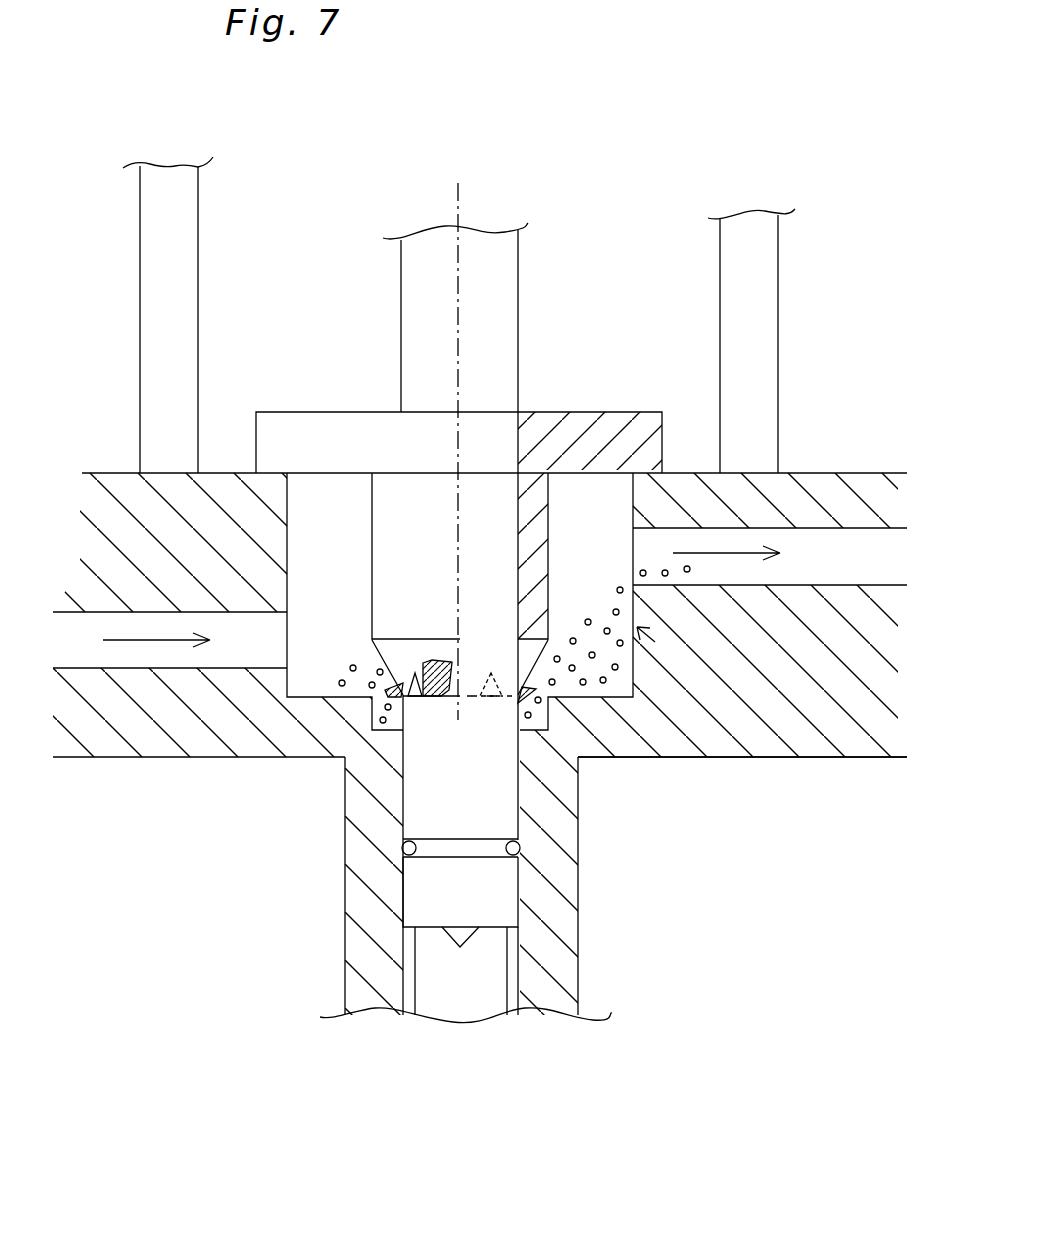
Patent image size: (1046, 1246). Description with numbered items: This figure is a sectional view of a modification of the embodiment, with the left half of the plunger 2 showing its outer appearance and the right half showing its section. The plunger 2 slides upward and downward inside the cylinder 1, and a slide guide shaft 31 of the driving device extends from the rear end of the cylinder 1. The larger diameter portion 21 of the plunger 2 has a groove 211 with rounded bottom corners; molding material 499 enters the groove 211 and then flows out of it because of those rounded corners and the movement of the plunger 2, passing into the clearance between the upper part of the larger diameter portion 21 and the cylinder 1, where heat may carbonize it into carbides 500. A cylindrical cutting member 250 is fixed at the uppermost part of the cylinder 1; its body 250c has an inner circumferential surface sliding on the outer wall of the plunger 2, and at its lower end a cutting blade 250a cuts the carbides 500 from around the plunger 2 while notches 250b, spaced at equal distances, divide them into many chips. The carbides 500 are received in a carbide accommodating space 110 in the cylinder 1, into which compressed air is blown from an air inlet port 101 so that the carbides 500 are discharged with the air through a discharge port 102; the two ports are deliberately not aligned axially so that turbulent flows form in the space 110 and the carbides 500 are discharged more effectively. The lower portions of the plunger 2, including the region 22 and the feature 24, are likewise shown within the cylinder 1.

The cylinder 1 is at (563, 958).
The plunger 2 is at (533, 254).
The larger diameter portion 21 is at (413, 890).
The discharge tube 22 is at (480, 985).
The notch 24 is at (458, 938).
The slide guide shaft 31 is at (182, 280).
The air inlet port 101 is at (90, 660).
The discharge port 102 is at (833, 572).
The carbide accommodating space 110 is at (777, 757).
The groove 211 is at (522, 848).
The cutting member 250 is at (589, 403).
The cutting blade 250a is at (427, 700).
The notches 250b is at (423, 663).
The body 250c is at (380, 612).
The molding material 499 is at (516, 848).
The carbides 500 is at (448, 663).